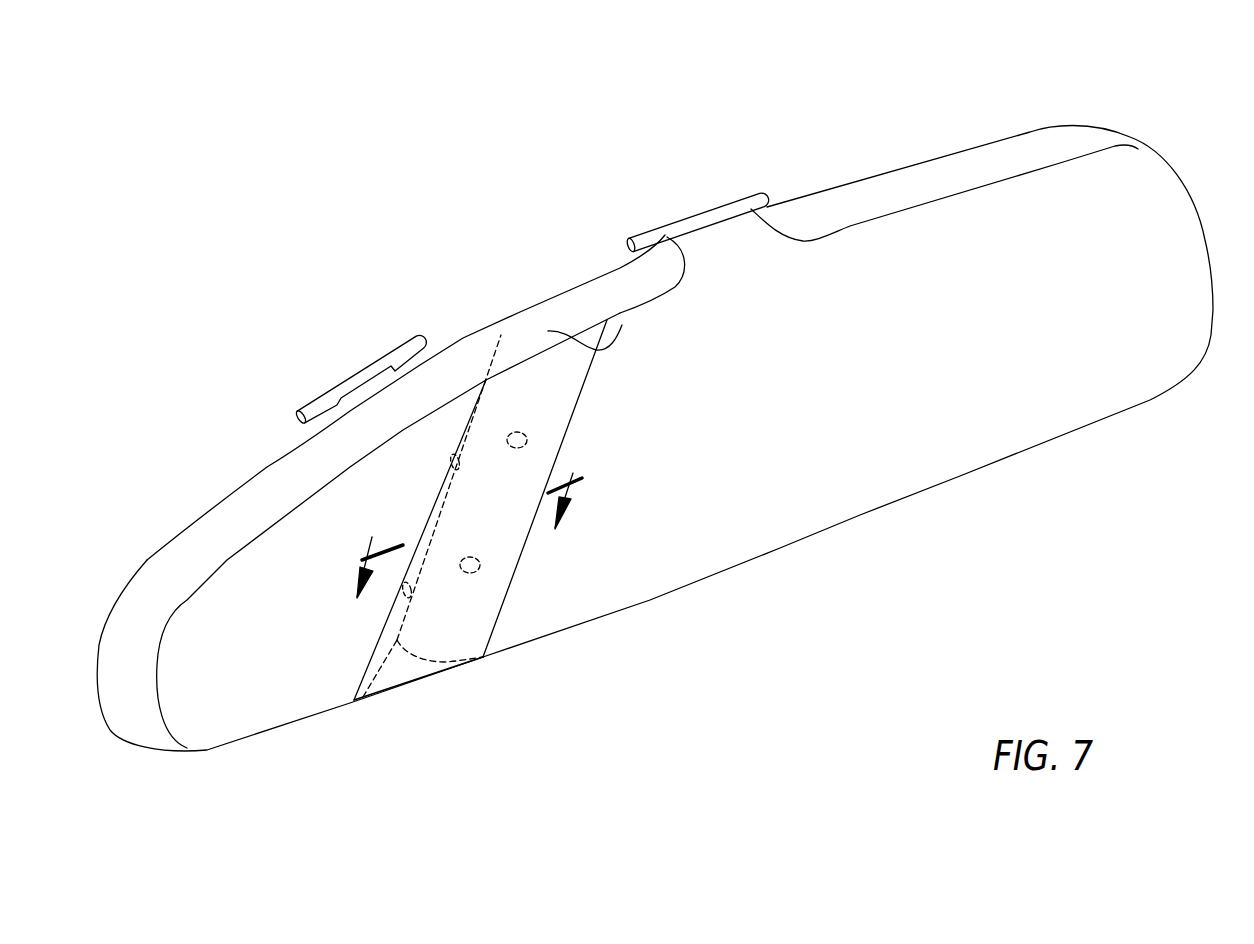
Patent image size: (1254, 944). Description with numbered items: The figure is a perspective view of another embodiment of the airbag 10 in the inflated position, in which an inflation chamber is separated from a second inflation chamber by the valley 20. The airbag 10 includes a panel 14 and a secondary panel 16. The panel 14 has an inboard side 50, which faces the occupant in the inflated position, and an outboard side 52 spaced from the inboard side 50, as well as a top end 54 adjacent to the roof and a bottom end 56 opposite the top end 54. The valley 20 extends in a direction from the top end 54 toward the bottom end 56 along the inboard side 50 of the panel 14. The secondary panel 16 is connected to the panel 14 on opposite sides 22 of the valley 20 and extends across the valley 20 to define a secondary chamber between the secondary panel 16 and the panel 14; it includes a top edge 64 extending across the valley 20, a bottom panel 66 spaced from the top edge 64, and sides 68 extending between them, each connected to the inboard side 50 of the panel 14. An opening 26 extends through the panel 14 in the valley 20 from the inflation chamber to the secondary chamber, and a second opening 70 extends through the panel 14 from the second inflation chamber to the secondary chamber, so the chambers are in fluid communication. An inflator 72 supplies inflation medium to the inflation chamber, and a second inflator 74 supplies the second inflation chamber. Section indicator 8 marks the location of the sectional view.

The airbag 10 is at (674, 433).
The panel 14 is at (1123, 210).
The secondary panel 16 is at (478, 530).
The valley 20 is at (534, 338).
The opposite sides 22 is at (488, 372).
The opening 26 is at (527, 443).
The inboard side 50 is at (980, 183).
The outboard side 52 is at (887, 173).
The top end 54 is at (270, 480).
The bottom end 56 is at (252, 745).
The top edge 64 is at (587, 353).
The bottom panel 66 is at (433, 675).
The sides 68 is at (587, 378).
The second opening 70 is at (450, 461).
The inflator 72 is at (652, 231).
The second inflator 74 is at (308, 402).
The section line 8- 8 is at (471, 534).